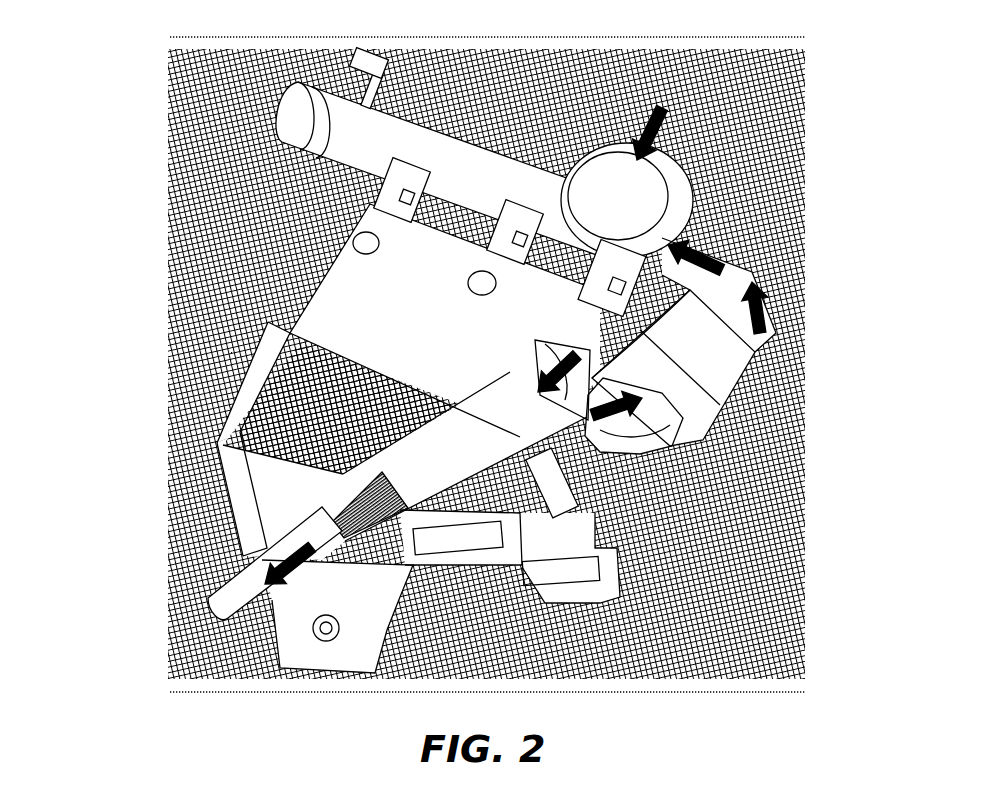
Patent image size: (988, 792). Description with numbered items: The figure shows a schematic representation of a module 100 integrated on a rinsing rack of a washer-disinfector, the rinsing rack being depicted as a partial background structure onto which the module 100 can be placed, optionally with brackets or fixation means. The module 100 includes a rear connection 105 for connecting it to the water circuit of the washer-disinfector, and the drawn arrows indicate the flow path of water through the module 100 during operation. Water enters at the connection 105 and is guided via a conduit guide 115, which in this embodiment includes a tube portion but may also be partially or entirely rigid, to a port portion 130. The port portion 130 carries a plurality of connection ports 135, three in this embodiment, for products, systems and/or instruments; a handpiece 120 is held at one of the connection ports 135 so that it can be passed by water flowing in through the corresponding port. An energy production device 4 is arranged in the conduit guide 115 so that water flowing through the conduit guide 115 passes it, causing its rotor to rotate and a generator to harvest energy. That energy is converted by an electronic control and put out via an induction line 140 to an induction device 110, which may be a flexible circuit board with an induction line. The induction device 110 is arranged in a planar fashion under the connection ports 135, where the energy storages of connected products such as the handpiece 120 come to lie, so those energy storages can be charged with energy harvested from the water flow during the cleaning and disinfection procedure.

The module 100 is at (722, 178).
The connection 105 is at (675, 100).
The induction device 110 is at (352, 315).
The conduit guide 115 is at (775, 300).
The handpiece 120 is at (460, 444).
The port portion 130 is at (572, 205).
The connection ports 135 is at (603, 283).
The induction line 140 is at (642, 440).
The energy production device 4 is at (748, 385).